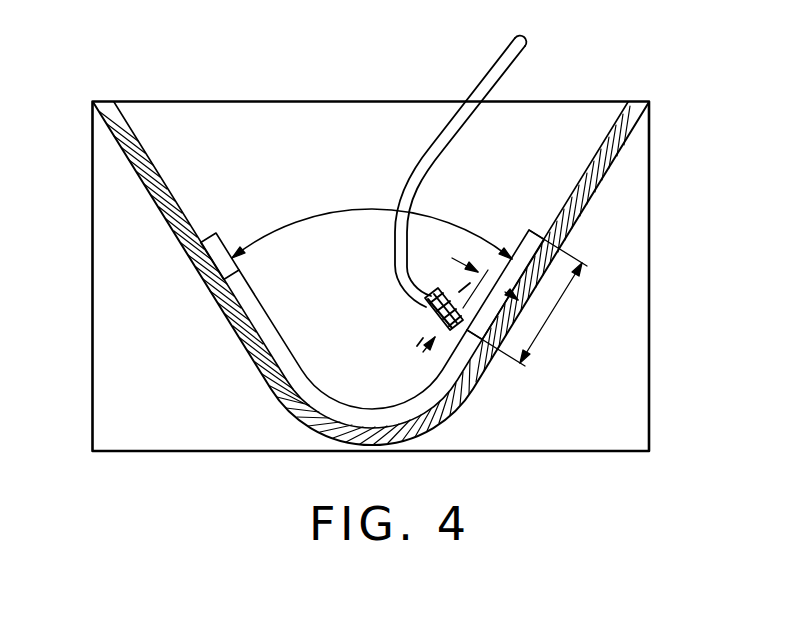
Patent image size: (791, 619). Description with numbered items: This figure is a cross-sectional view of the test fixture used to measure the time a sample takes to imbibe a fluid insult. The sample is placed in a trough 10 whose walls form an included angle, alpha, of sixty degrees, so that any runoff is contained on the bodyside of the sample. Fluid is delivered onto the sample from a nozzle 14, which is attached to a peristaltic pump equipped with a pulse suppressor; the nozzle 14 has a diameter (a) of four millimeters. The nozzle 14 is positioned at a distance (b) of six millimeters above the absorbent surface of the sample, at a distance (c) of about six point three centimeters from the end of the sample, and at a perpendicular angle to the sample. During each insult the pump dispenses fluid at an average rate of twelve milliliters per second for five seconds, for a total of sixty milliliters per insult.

The trough 10 is at (143, 152).
The nozzle 14 is at (427, 293).
The nozzle diameter a is at (337, 210).
The nozzle-to-sample distance b is at (494, 246).
The distance from sample end c is at (556, 309).